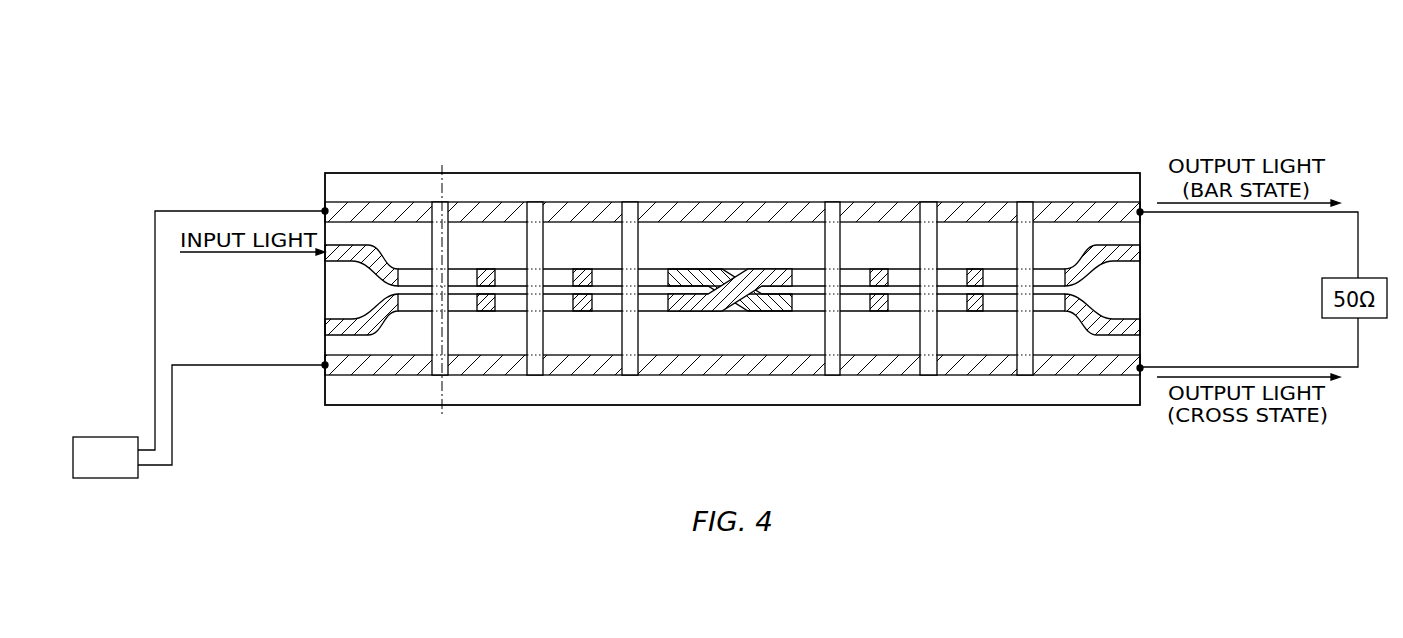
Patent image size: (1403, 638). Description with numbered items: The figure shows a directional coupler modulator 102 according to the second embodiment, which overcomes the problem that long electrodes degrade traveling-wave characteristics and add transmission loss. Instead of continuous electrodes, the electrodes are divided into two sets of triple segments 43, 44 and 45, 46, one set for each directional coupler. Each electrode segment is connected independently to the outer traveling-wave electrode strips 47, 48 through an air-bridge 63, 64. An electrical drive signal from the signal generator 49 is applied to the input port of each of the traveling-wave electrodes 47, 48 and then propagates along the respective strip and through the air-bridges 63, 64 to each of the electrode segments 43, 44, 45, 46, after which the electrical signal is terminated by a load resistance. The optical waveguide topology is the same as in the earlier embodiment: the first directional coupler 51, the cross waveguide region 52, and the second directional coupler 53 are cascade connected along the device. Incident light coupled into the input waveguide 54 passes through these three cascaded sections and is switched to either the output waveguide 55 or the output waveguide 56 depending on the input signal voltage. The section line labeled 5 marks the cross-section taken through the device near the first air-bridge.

The directional coupler modulator 102 is at (187, 94).
The traveling-wave electrode strip 47 is at (376, 201).
The traveling-wave electrode strip 48 is at (376, 377).
The signal generator 49 is at (118, 470).
The input waveguide 54 is at (332, 244).
The output waveguide 55 is at (1130, 245).
The output waveguide 56 is at (1130, 337).
The air-bridge 63 is at (432, 262).
The air-bridge 64 is at (432, 318).
The electrode segments 43 is at (608, 268).
The electrode segments 44 is at (608, 311).
The electrode segments 45 is at (862, 267).
The electrode segments 46 is at (862, 313).
The first directional coupler 51 is at (698, 150).
The cross waveguide region 52 is at (762, 150).
The second directional coupler 53 is at (1065, 150).
The section line 5- 5 is at (442, 173).